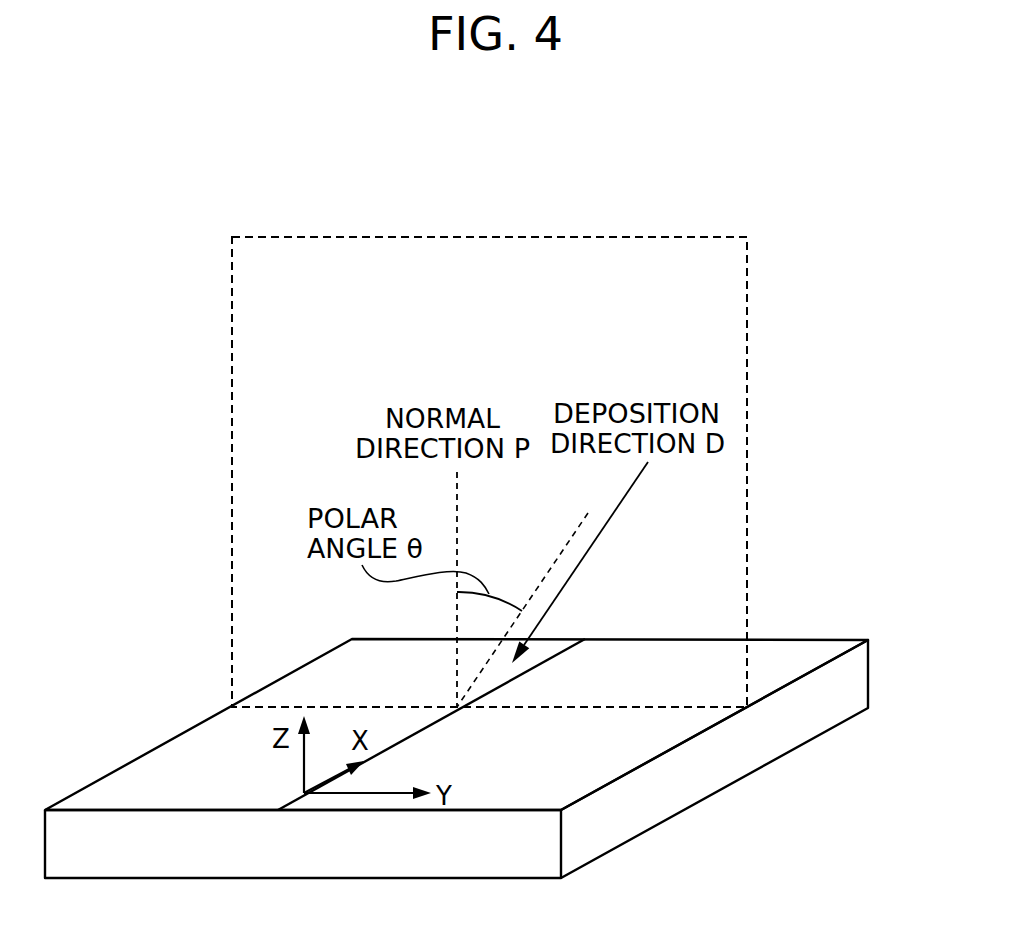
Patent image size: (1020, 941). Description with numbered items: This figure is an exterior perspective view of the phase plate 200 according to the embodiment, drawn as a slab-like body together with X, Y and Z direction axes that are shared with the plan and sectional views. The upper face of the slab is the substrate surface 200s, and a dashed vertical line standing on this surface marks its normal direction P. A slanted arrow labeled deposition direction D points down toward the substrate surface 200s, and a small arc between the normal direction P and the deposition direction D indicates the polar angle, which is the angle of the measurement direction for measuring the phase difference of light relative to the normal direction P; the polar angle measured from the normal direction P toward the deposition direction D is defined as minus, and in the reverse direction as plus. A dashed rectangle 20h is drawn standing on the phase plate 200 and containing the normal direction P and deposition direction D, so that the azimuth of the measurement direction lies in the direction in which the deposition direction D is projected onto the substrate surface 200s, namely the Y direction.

The deposition region / opening 20h is at (611, 237).
The phase plate 200 is at (792, 561).
The substrate surface 200s is at (773, 653).